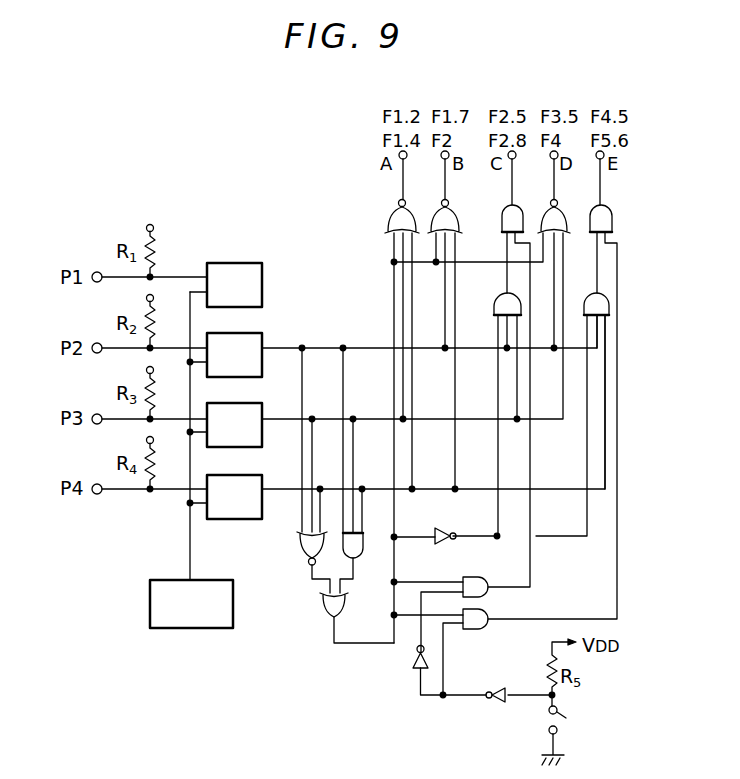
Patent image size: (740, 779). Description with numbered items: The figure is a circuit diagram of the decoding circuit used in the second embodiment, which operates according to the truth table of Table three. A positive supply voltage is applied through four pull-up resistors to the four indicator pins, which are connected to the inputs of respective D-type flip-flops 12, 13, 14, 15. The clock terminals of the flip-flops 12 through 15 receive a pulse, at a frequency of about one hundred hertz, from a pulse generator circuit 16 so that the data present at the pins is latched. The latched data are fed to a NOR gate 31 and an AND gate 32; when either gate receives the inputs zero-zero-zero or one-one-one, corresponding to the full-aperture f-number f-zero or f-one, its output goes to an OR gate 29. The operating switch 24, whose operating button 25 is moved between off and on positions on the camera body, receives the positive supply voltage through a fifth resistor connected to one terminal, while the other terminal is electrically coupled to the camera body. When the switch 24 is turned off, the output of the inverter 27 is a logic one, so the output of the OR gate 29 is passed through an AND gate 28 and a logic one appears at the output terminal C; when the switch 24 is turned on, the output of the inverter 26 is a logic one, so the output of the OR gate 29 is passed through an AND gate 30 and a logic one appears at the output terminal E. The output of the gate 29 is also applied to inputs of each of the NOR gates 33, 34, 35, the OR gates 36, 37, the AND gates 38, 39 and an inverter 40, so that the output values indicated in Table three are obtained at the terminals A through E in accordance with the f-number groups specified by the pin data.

The D-type flip-flop 12 is at (262, 283).
The D-type flip-flop 13 is at (262, 340).
The D-type flip-flop 14 is at (262, 410).
The D-type flip-flop 15 is at (255, 476).
The pulse generator circuit 16 is at (216, 604).
The operating switch 24 is at (597, 730).
The operating button 25 is at (566, 718).
The inverter 26 is at (503, 688).
The inverter 27 is at (413, 666).
The AND gate 28 is at (483, 576).
The OR gate 29 is at (330, 616).
The AND gate 30 is at (489, 613).
The NOR gate 31 is at (300, 542).
The AND gate 32 is at (360, 559).
The NOR gate 33 is at (388, 216).
The NOR gate 34 is at (457, 215).
The NOR gate 35 is at (566, 215).
The OR gate 36 is at (518, 210).
The OR gate 37 is at (612, 215).
The AND gate 38 is at (494, 300).
The AND gate 39 is at (585, 300).
The inverter 40 is at (444, 527).